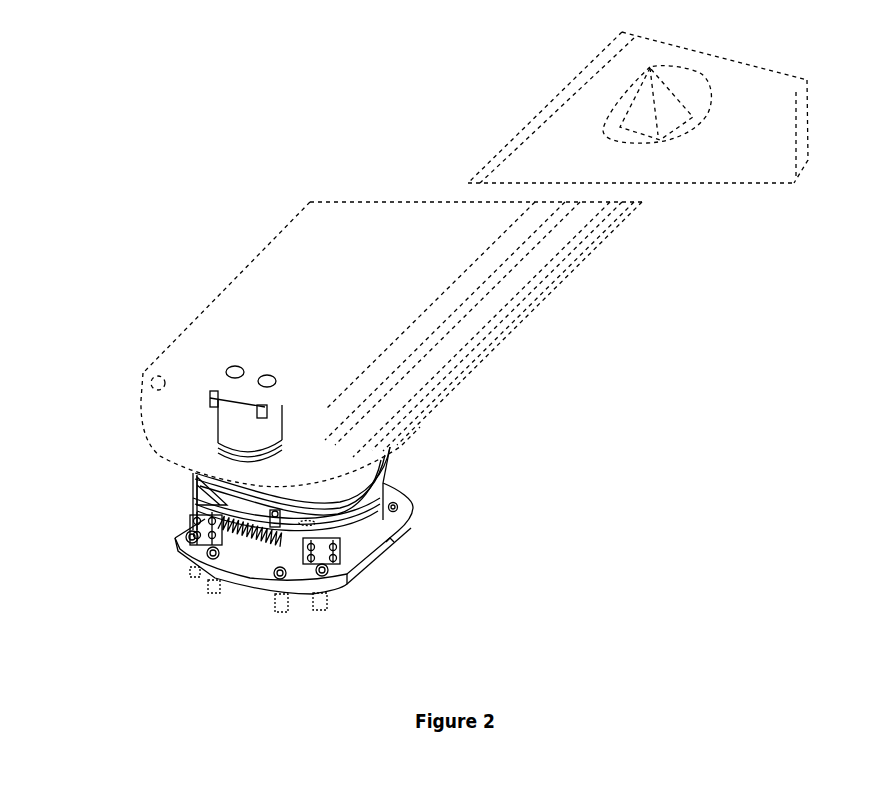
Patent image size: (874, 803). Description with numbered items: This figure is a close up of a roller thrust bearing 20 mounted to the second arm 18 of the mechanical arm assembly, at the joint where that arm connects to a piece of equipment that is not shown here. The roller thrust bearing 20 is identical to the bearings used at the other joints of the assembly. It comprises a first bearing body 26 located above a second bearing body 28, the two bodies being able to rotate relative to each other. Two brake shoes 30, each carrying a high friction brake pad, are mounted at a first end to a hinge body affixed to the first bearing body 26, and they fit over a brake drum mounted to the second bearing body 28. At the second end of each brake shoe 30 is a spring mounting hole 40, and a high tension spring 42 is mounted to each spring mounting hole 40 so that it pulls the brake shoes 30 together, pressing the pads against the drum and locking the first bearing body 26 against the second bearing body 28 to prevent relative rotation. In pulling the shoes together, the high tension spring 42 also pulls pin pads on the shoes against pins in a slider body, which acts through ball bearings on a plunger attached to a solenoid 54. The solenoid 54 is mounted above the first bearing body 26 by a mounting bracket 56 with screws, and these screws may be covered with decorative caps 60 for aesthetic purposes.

The second arm 18 is at (183, 340).
The roller thrust bearing 20 is at (577, 495).
The first bearing body 26 is at (395, 460).
The second bearing body 28 is at (342, 572).
The brake shoes 30 is at (200, 493).
The spring mounting hole 40 is at (193, 533).
The high tension spring 42 is at (236, 538).
The solenoid 54 is at (235, 428).
The mounting bracket 56 is at (215, 403).
The decorative caps 60 is at (263, 375).